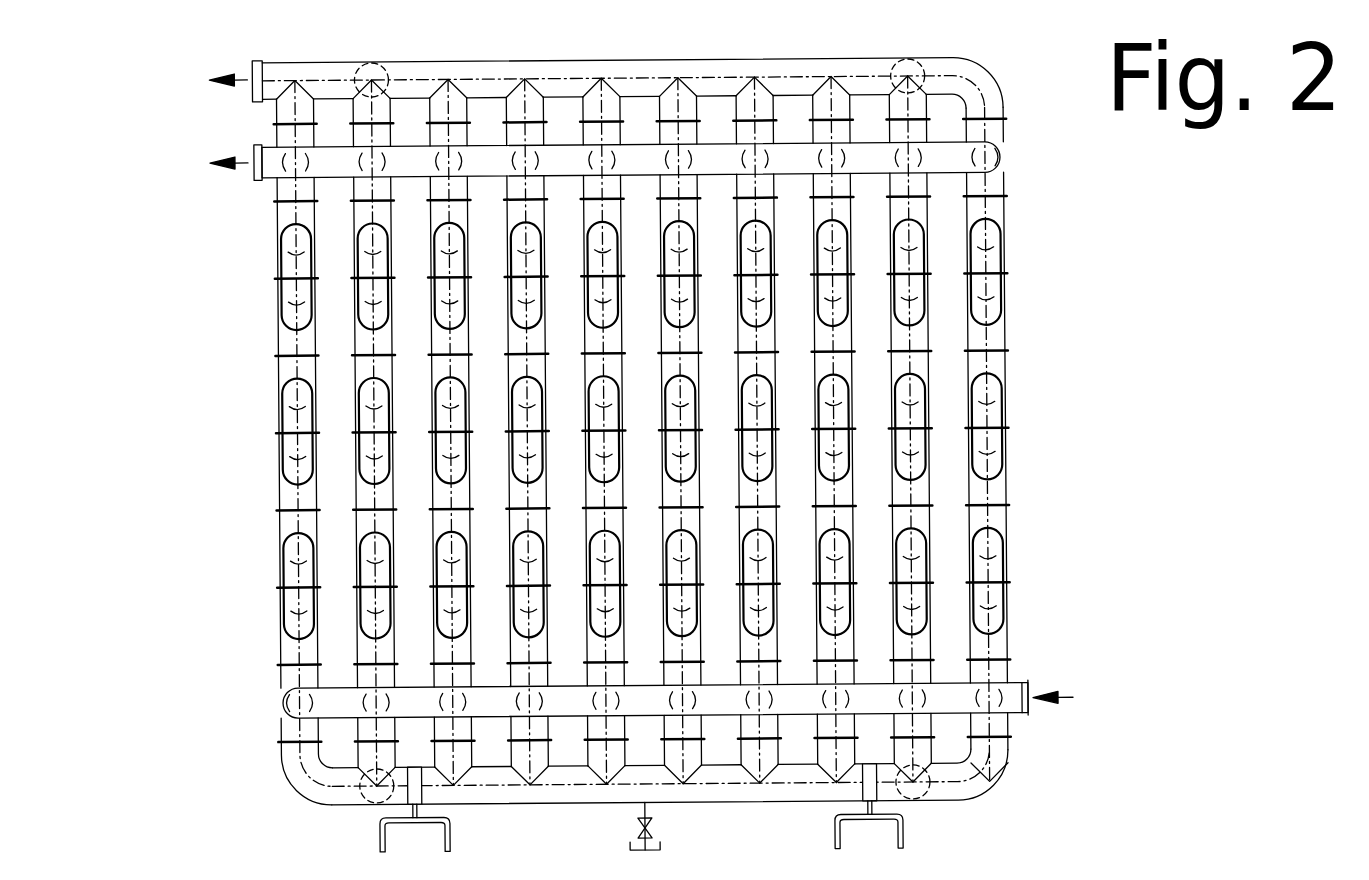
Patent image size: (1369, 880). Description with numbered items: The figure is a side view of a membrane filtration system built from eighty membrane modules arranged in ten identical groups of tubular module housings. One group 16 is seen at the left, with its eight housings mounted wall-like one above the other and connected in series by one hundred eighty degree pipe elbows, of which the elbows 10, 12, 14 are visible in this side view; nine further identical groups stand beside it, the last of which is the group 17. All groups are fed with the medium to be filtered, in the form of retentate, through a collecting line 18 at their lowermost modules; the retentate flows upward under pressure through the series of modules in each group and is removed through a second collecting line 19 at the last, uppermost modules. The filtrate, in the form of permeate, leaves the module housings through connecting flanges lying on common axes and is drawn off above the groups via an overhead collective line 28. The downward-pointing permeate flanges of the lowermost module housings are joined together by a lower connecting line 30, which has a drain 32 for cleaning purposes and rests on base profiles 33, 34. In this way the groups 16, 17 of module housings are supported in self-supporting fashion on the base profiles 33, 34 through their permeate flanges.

The pipe elbow 10 is at (292, 590).
The pipe elbow 12 is at (292, 455).
The pipe elbow 14 is at (293, 322).
The group 16 is at (209, 442).
The last group 17 is at (1041, 274).
The collecting line 18 is at (332, 706).
The second collecting line 19 is at (945, 152).
The overhead collective line 28 is at (309, 72).
The connecting line 30 is at (977, 792).
The drain 32 is at (650, 830).
The base profile 33 is at (383, 850).
The base profile 34 is at (903, 830).